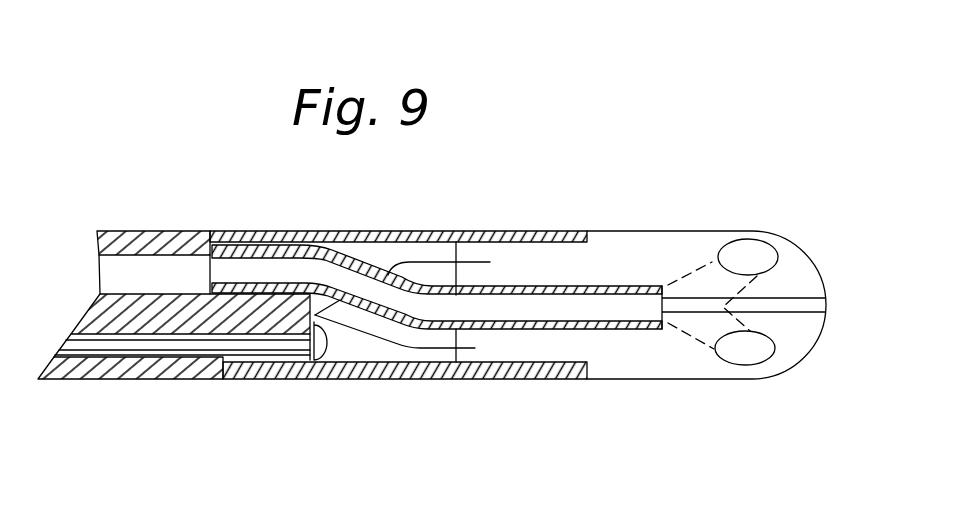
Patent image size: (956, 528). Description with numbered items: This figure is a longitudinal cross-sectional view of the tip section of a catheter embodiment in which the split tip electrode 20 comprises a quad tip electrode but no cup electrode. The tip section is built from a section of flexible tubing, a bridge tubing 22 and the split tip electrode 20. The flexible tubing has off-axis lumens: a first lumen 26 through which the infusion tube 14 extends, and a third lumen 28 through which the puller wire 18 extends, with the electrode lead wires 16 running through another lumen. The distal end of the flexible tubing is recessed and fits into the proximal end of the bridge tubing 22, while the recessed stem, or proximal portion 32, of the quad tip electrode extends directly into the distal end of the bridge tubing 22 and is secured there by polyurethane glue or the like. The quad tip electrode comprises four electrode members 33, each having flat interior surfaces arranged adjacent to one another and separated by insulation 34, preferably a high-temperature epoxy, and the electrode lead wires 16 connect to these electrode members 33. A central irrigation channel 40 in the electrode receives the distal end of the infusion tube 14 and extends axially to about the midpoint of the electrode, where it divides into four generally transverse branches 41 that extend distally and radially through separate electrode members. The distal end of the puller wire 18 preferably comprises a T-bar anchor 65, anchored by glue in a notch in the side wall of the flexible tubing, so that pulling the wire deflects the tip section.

The infusion tube 14 is at (347, 260).
The electrode lead wires 16 is at (444, 233).
The puller wire 18 is at (200, 340).
The split tip electrode 20 is at (688, 315).
The bridge tubing 22 is at (377, 232).
The first lumen 26 is at (107, 267).
The third lumen 28 is at (93, 337).
The proximal portion 32 is at (517, 345).
The electrode members 33 is at (780, 283).
The insulation 34 is at (793, 307).
The central irrigation channel 40 is at (673, 325).
The transverse branches 41 is at (708, 262).
The T-bar anchors 65 is at (322, 362).